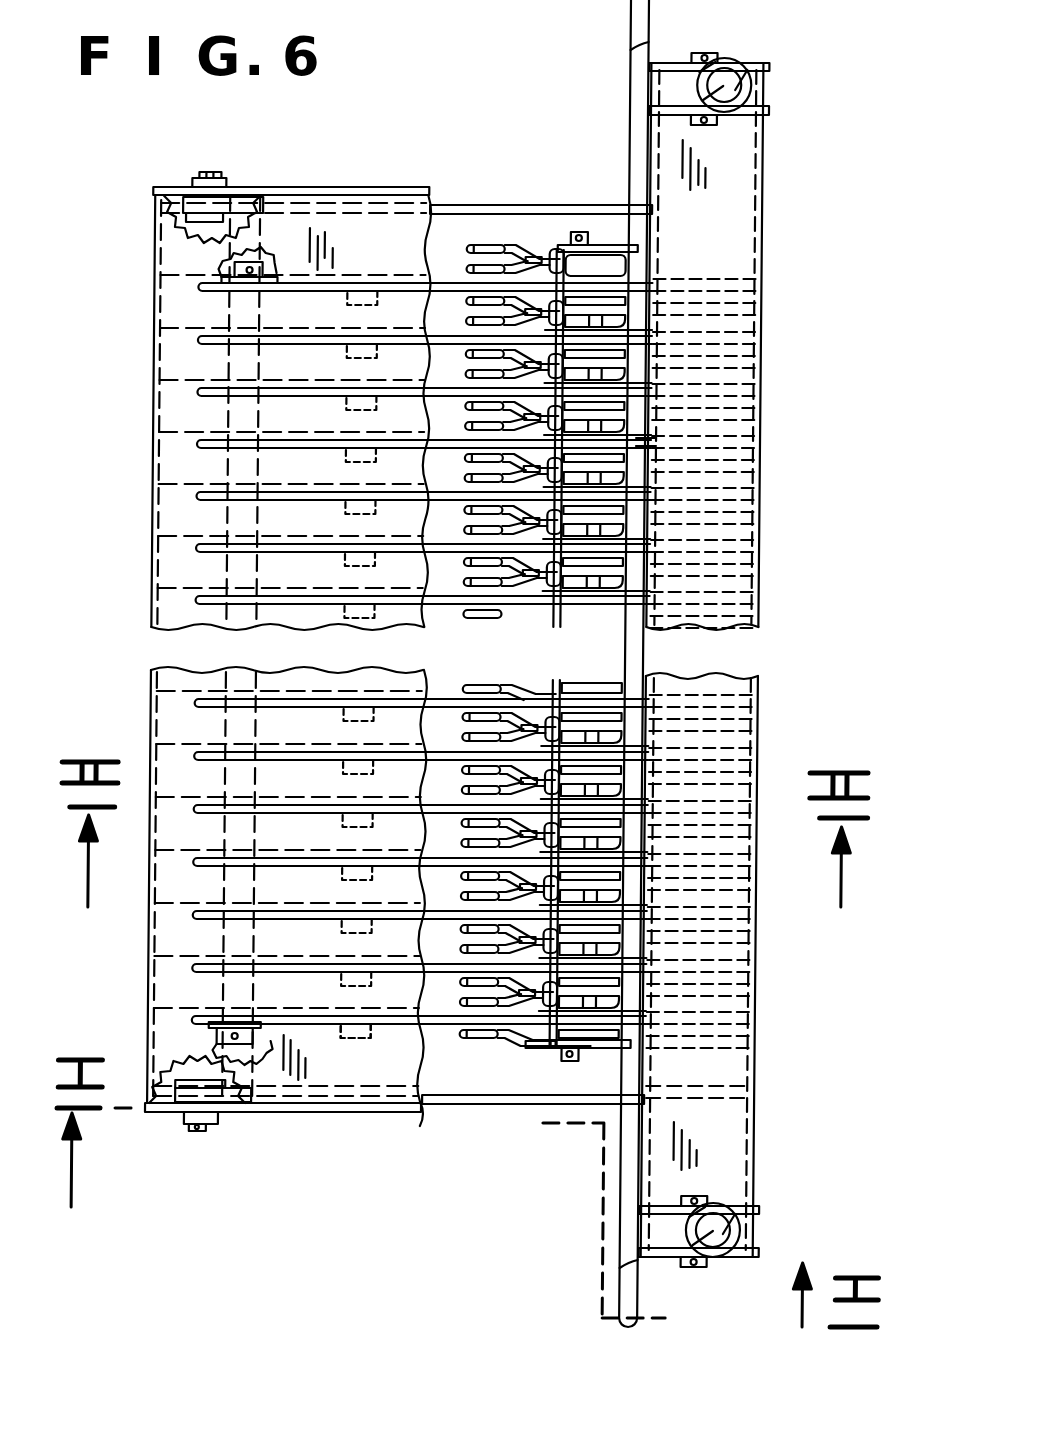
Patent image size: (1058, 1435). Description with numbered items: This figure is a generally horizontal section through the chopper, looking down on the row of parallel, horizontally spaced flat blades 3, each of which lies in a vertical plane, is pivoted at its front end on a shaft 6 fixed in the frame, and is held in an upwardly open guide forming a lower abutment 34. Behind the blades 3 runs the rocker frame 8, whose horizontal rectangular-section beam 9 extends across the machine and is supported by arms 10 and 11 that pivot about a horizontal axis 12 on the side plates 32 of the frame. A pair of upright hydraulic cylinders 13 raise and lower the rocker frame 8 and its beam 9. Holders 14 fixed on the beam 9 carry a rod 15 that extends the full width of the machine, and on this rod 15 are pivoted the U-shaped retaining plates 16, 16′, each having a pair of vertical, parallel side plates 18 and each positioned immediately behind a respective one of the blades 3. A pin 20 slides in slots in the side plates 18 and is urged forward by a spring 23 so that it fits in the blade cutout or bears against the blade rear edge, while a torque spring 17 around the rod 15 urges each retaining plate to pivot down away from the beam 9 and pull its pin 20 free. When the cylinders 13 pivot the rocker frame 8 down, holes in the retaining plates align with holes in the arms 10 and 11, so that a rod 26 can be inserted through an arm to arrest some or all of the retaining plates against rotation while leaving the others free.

The flat blade 3 is at (443, 281).
The shaft 6 is at (267, 254).
The rocker frame 8 is at (789, 378).
The horizontal rectangular-section beam 9 is at (740, 151).
The arm 10 is at (245, 183).
The arm 11 is at (246, 1102).
The horizontal axis 12 is at (203, 174).
The upright hydraulic cylinder 13 is at (729, 84).
The holder 14 is at (584, 290).
The rod 15 is at (590, 1049).
The retaining plate 16 is at (648, 446).
The retaining plate 16′ is at (649, 740).
The torque spring 17 is at (600, 246).
The side plate 18 is at (658, 454).
The pin 20 is at (535, 298).
The spring 23 is at (475, 1042).
The rod 26 is at (633, 38).
The side plate 32 is at (367, 192).
The lower abutment 34 is at (367, 1031).